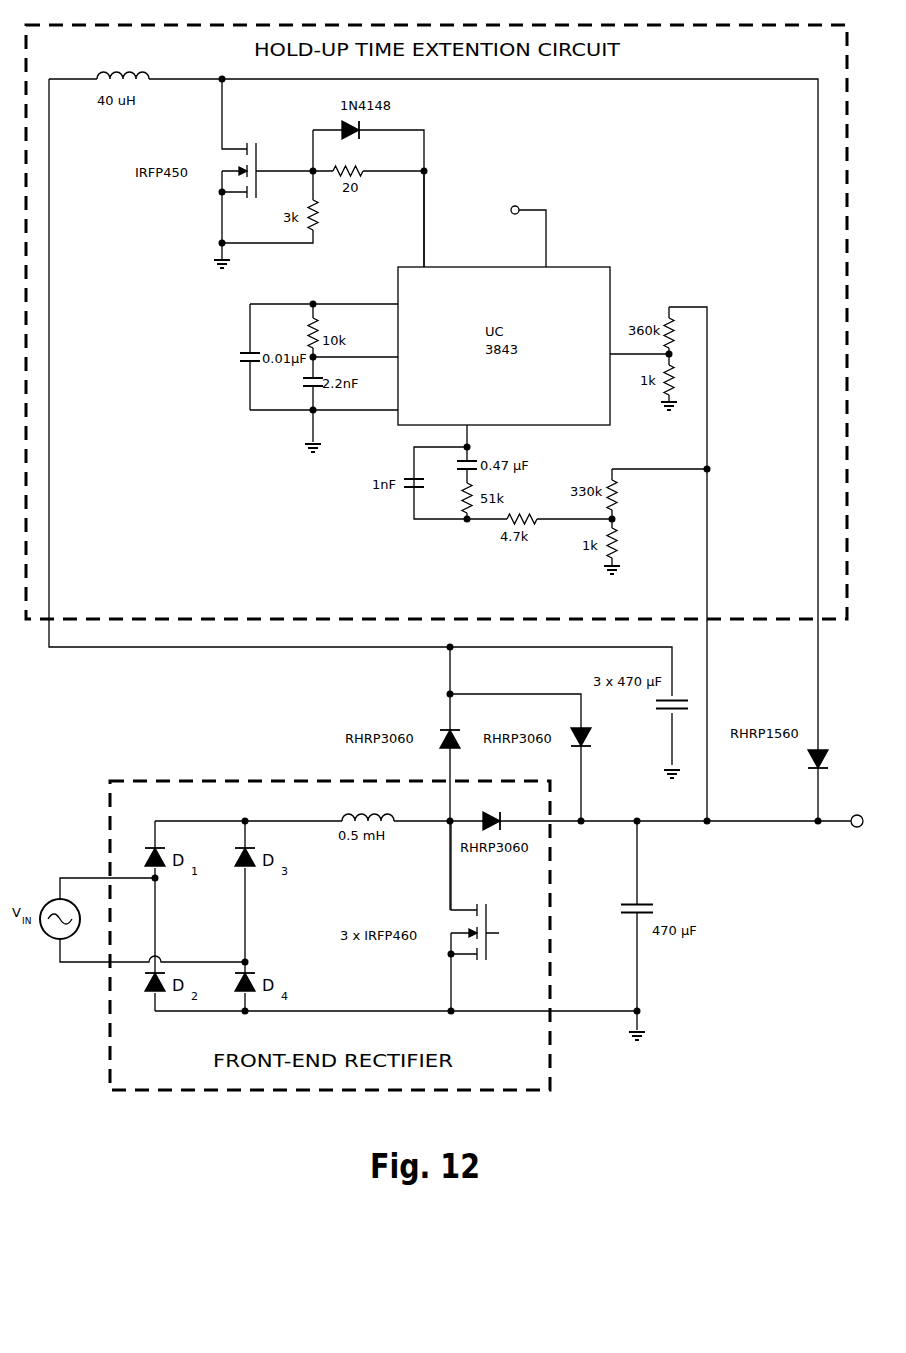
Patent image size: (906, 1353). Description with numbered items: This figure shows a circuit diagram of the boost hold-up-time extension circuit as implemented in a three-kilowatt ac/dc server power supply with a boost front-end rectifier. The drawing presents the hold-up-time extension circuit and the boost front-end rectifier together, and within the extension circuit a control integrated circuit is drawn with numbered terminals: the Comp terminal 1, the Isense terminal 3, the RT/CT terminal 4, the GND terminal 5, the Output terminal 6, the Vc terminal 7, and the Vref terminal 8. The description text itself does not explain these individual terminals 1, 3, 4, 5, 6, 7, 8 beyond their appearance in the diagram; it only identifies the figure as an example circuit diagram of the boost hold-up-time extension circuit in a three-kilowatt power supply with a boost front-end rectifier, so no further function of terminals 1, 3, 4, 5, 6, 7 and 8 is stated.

The UC3843 Comp pin 1 is at (469, 424).
The UC3843 Isense pin 3 is at (615, 360).
The UC3843 RT/CT pin 4 is at (376, 353).
The UC3843 GND pin 5 is at (341, 405).
The UC3843 Output pin 6 is at (449, 230).
The UC3843 Vc pin 7 is at (516, 246).
The UC3843 Vref pin 8 is at (339, 300).